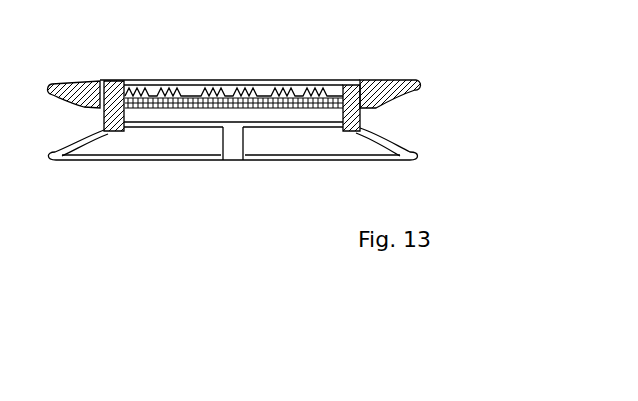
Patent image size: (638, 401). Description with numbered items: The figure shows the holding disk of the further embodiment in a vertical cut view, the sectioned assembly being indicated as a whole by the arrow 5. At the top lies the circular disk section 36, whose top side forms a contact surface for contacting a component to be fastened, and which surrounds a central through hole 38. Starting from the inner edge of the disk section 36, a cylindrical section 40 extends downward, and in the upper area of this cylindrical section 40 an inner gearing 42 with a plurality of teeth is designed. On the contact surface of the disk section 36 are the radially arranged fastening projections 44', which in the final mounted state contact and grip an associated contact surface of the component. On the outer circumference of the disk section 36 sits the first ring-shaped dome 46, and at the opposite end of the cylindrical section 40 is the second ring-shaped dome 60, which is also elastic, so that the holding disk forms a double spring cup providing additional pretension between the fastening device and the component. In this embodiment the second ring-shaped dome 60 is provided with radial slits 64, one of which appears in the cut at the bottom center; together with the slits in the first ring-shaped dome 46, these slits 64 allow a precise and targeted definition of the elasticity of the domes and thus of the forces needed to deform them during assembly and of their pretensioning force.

The sensor assembly 5 is at (381, 30).
The disk section 36 is at (98, 84).
The central through hole 38 is at (352, 83).
The cylindrical section 40 is at (363, 113).
The inner gearing 42 is at (218, 90).
The fastening projections 44' is at (234, 61).
The first ring-shaped dome 46 is at (50, 85).
The second ring-shaped dome 60 is at (48, 158).
The radial slits 64 is at (232, 133).